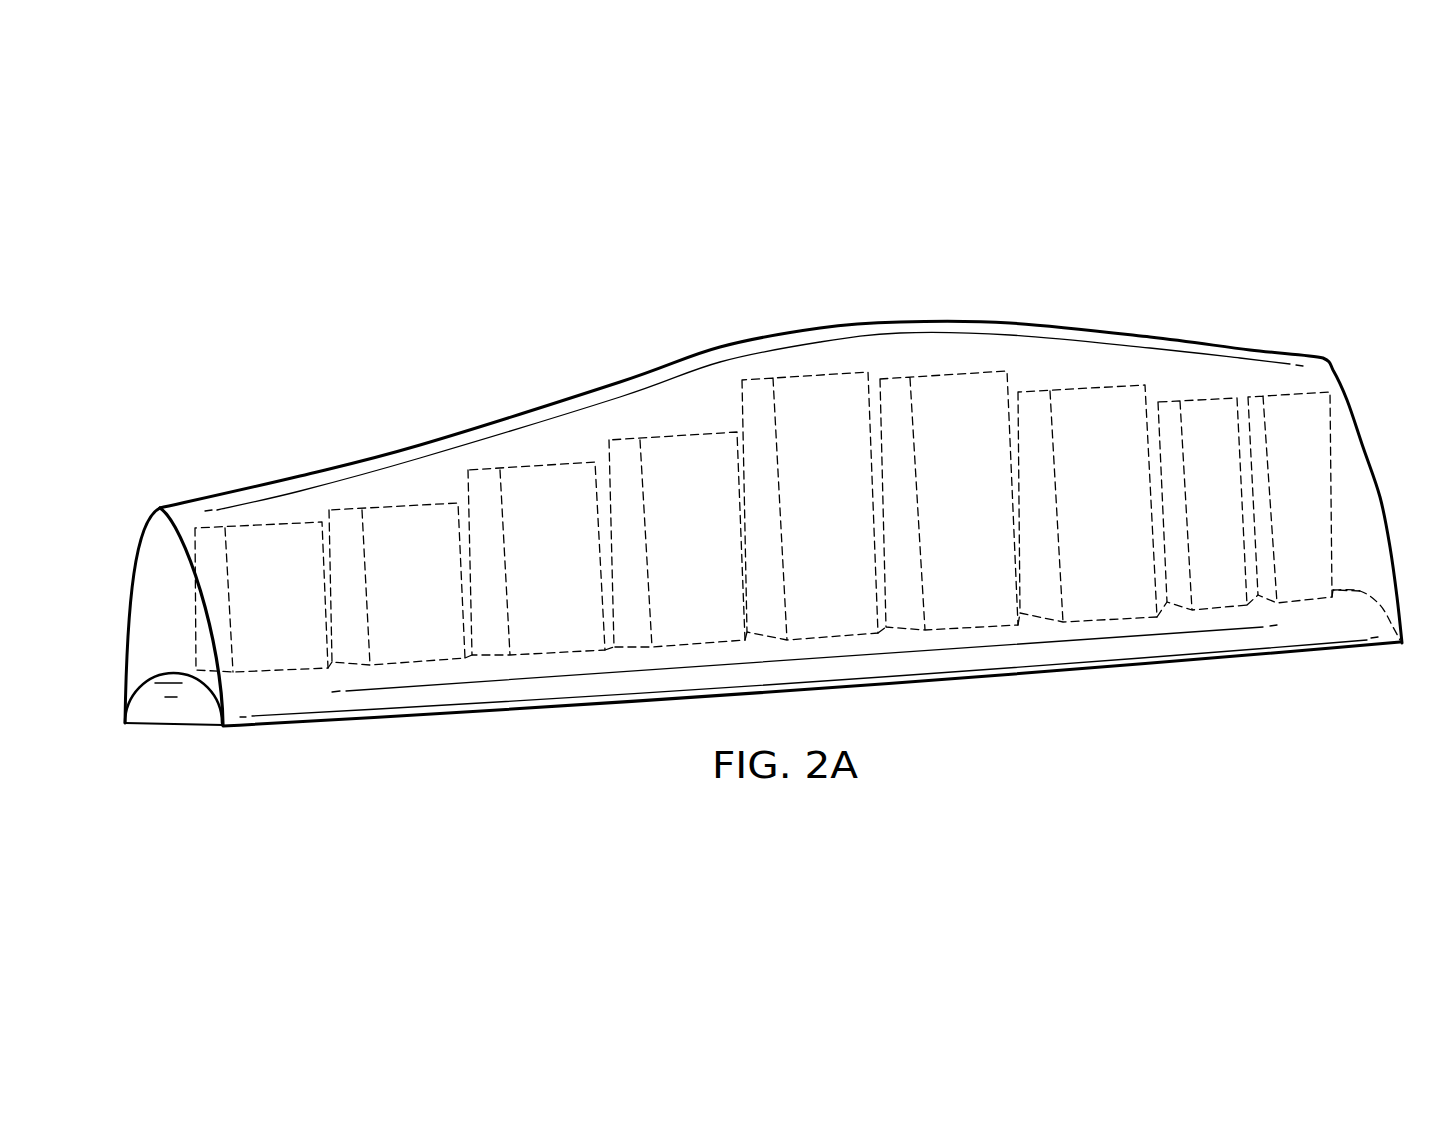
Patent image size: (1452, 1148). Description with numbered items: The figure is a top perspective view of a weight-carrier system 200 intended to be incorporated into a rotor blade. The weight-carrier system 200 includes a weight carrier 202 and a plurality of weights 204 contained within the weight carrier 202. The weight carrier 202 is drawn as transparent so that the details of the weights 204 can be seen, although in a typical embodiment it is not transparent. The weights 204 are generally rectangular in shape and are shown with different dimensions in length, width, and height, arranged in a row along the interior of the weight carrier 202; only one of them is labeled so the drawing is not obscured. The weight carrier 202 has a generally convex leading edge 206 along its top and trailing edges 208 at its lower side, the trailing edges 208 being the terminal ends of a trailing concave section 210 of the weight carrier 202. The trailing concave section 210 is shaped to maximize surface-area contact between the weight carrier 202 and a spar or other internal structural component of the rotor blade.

The weight-carrier system 200 is at (598, 280).
The weight carrier 202 is at (1367, 468).
The weights 204 is at (272, 522).
The leading edge 206 is at (1055, 323).
The trailing edges 208 is at (1095, 672).
The trailing concave section 210 is at (200, 697).